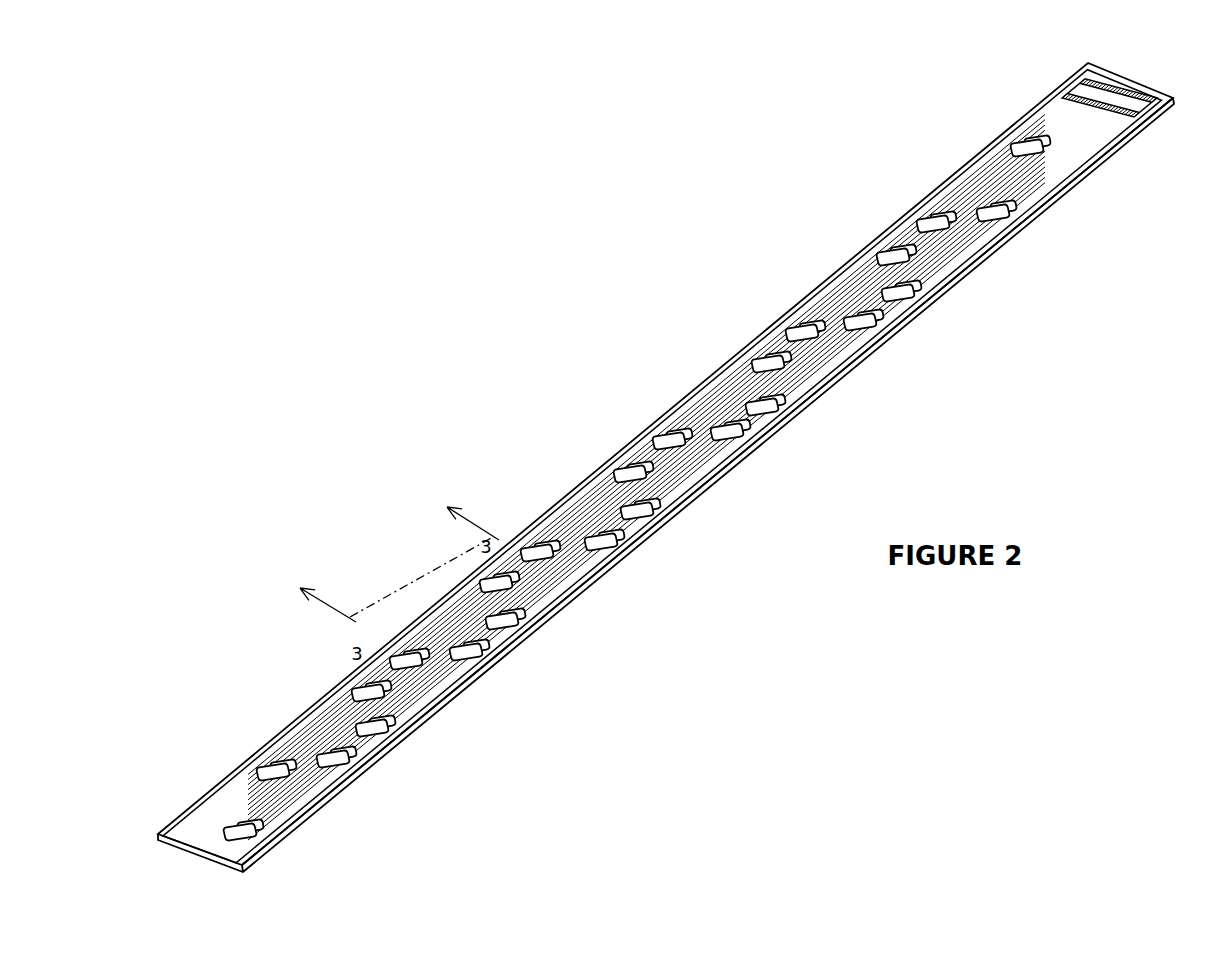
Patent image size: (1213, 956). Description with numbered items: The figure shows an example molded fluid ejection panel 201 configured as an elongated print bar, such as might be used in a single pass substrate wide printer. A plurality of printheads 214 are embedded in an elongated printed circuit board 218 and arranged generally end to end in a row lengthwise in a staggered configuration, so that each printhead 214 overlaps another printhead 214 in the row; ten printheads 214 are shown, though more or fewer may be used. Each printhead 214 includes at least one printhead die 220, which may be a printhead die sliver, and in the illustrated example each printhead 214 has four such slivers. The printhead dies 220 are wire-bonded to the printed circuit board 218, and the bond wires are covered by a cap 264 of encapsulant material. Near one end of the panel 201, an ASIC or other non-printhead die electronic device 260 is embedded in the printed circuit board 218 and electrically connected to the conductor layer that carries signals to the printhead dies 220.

The molded fluid ejection panel 201 is at (628, 333).
The printhead 214 is at (972, 179).
The printed circuit board 218 is at (830, 384).
The printhead die 220 is at (948, 255).
The non-printhead die electronic device 260 is at (1122, 82).
The cap 264 is at (878, 251).